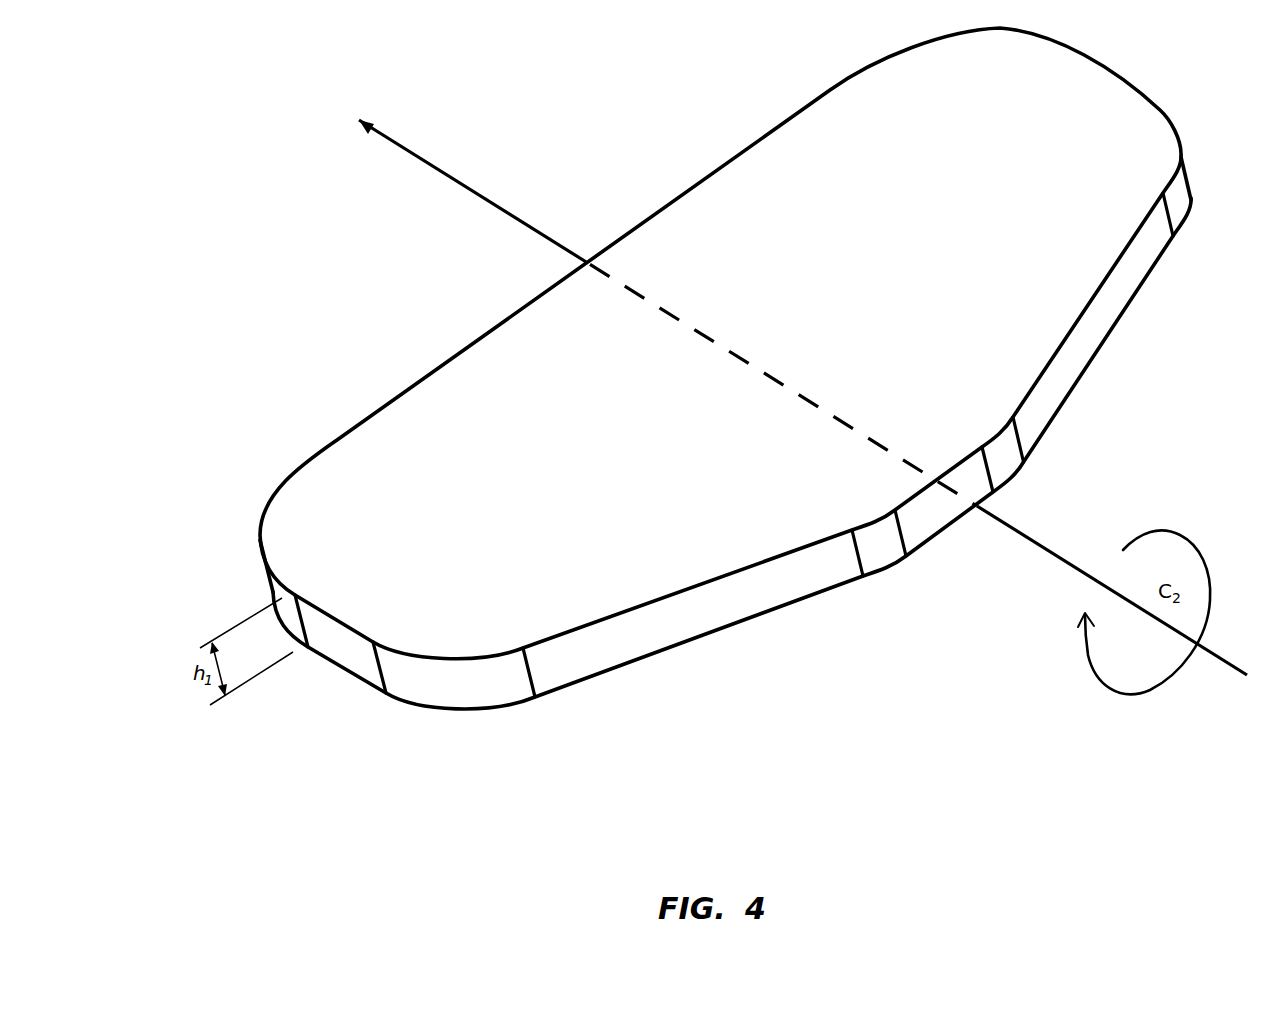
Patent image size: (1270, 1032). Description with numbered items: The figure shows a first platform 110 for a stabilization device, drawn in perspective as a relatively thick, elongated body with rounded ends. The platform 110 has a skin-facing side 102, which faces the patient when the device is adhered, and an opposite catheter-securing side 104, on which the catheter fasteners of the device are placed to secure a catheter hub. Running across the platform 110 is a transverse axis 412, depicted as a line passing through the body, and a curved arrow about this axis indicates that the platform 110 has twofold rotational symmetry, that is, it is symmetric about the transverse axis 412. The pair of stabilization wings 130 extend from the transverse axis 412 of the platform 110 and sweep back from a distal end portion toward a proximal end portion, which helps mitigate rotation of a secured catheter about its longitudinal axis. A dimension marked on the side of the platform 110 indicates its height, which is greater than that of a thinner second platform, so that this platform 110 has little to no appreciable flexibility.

The platform 110 is at (669, 409).
The skin-facing side 102 is at (471, 715).
The catheter-securing side 104 is at (461, 336).
The stabilization wings 130 is at (938, 275).
The transverse axis 412 is at (445, 173).